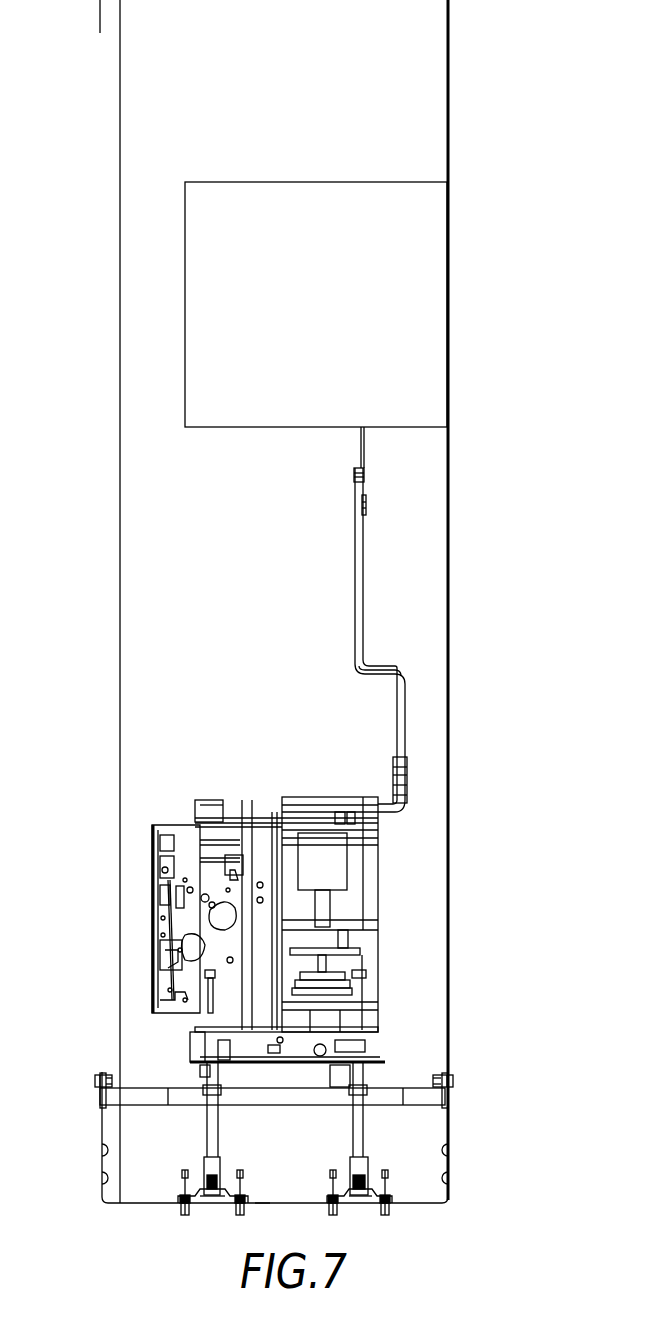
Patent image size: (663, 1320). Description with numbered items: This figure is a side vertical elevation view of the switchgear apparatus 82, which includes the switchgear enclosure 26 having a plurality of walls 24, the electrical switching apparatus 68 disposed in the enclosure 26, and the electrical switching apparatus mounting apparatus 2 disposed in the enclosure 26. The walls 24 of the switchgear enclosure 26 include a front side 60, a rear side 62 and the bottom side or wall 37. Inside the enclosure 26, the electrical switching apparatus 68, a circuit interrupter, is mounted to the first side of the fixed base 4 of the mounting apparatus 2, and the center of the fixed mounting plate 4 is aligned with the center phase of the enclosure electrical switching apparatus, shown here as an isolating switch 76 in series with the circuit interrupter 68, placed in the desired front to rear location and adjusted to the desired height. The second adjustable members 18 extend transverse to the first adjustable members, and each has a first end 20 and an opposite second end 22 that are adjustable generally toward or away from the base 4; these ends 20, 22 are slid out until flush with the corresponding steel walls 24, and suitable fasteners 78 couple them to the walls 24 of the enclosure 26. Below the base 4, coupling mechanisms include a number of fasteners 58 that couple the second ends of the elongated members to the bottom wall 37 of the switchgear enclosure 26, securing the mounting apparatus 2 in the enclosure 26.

The electrical switching apparatus mounting apparatus 2 is at (400, 1080).
The base 4 is at (278, 1068).
The second adjustable members 18 is at (272, 1098).
The first end 20 is at (100, 1101).
The opposite second end 22 is at (448, 1100).
The walls 24 is at (100, 1183).
The switchgear enclosure 26 is at (450, 570).
The wall 37 is at (260, 1204).
The fasteners 58 is at (240, 1216).
The front side 60 is at (100, 1155).
The rear side 62 is at (450, 1155).
The electrical switching apparatus 68 is at (373, 918).
The isolating switch 76 is at (273, 197).
The fasteners 78 is at (95, 1082).
The switchgear apparatus 82 is at (48, 892).